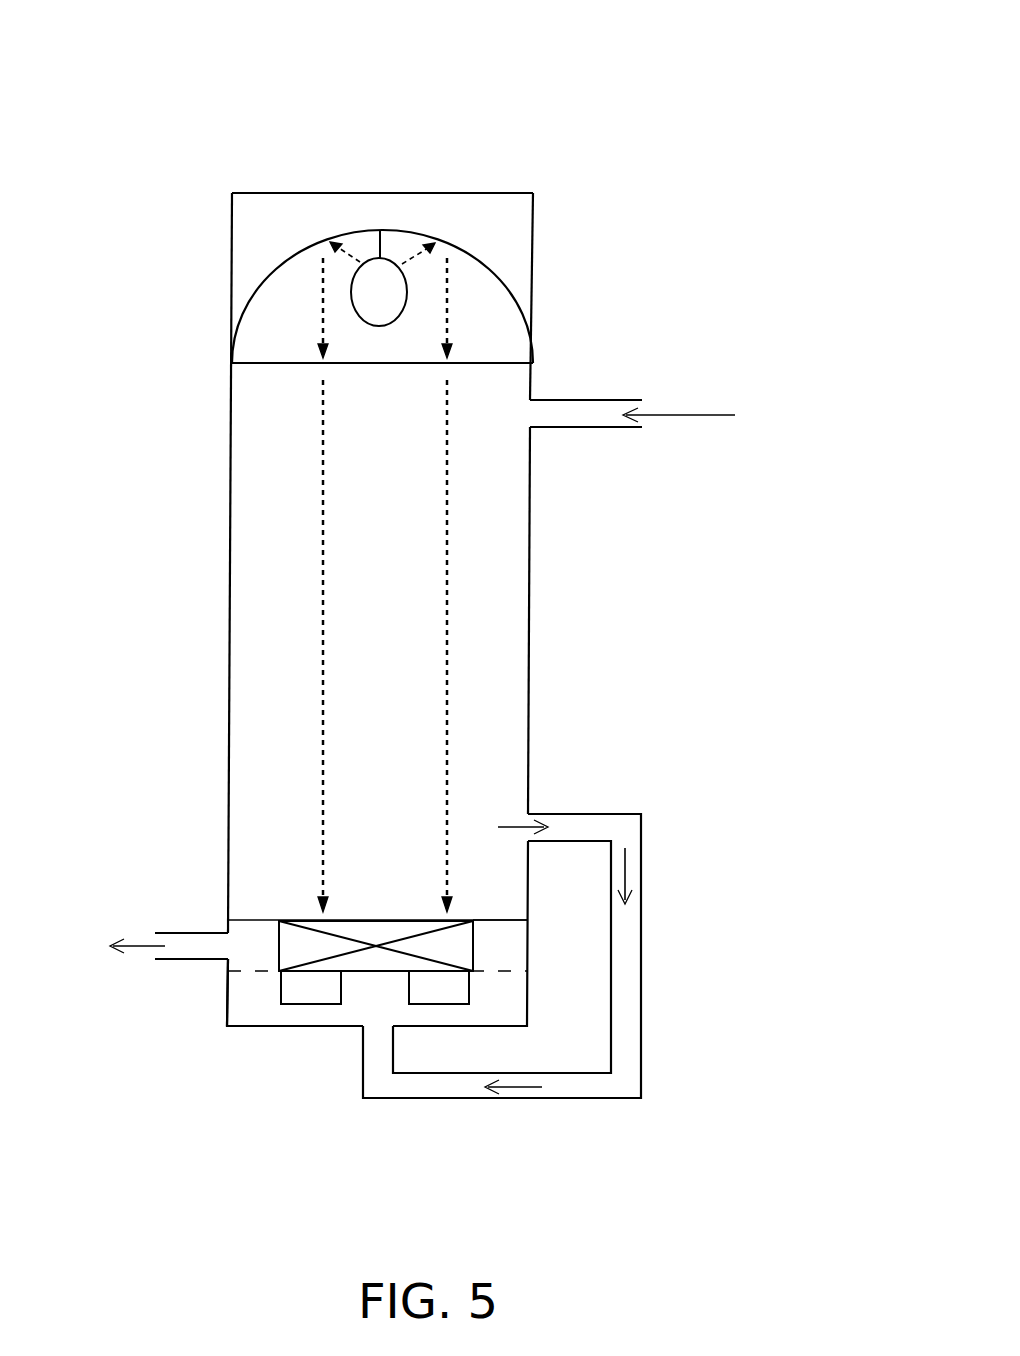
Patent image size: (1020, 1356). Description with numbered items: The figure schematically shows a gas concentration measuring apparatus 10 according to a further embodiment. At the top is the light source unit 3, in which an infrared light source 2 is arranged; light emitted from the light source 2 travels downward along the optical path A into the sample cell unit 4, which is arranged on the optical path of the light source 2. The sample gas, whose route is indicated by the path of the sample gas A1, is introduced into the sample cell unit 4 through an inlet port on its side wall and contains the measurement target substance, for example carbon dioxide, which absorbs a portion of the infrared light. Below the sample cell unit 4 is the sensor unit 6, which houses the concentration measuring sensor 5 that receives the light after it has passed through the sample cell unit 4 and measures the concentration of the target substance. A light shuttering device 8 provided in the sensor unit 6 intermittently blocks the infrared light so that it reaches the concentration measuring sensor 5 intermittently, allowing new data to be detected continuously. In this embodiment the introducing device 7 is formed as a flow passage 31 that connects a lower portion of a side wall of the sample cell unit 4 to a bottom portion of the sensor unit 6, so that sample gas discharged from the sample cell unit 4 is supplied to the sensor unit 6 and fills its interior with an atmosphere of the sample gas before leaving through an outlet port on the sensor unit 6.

The light source 2 is at (388, 287).
The light source unit 3 is at (272, 193).
The sample cell unit 4 is at (228, 463).
The concentration measuring sensor 5 is at (316, 1005).
The sensor unit 6 is at (223, 1003).
The introducing device 7 is at (625, 971).
The light shuttering device 8 is at (357, 973).
The gas concentration measuring apparatus 10 is at (578, 220).
The flow passage 31 is at (641, 914).
The optical path A is at (320, 661).
The path of the sample gas A1 is at (677, 415).